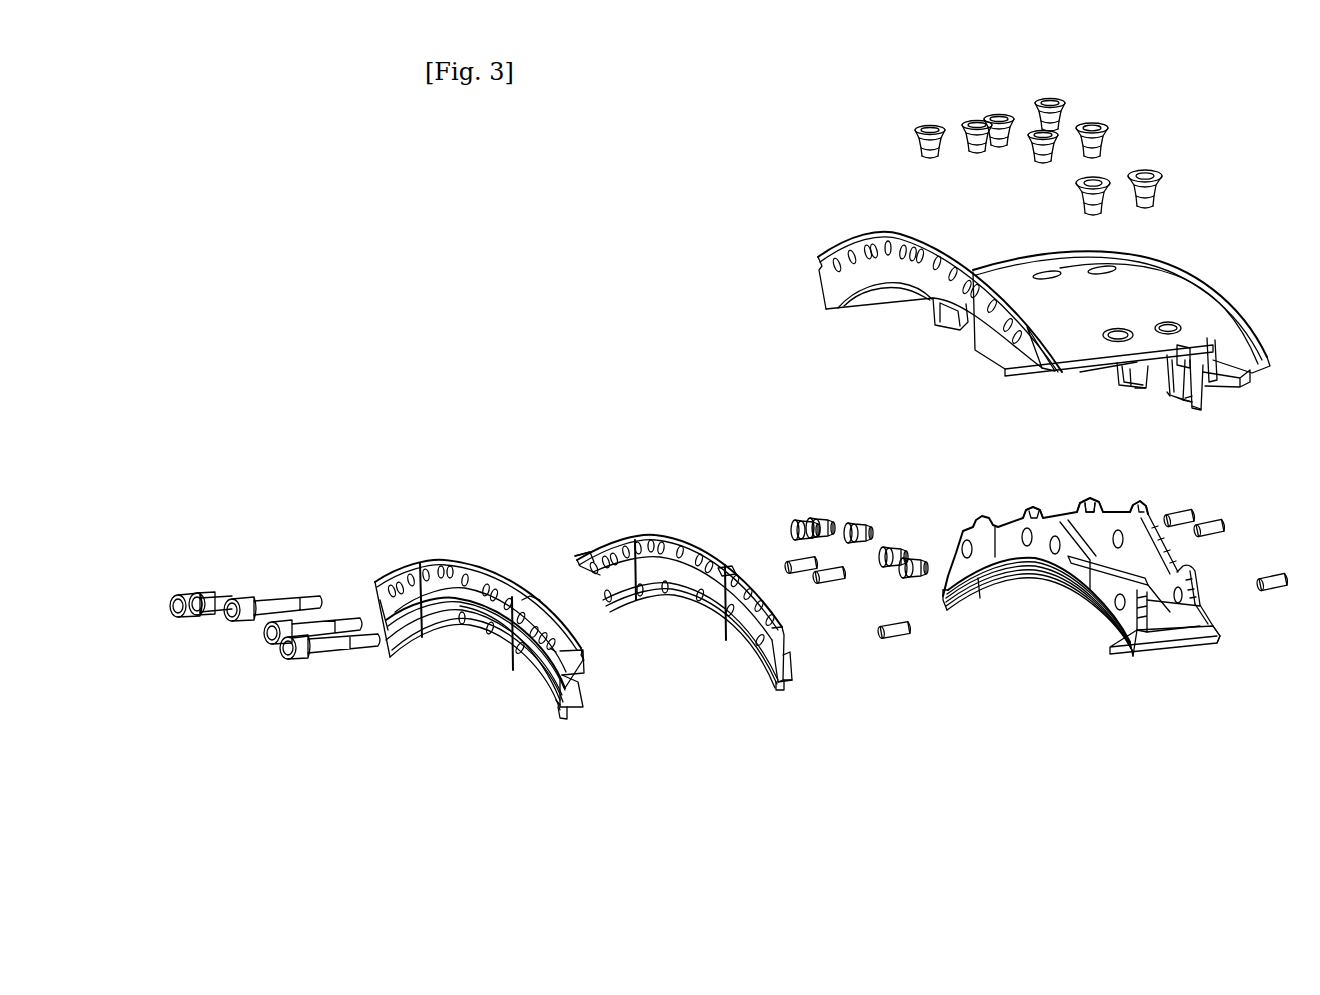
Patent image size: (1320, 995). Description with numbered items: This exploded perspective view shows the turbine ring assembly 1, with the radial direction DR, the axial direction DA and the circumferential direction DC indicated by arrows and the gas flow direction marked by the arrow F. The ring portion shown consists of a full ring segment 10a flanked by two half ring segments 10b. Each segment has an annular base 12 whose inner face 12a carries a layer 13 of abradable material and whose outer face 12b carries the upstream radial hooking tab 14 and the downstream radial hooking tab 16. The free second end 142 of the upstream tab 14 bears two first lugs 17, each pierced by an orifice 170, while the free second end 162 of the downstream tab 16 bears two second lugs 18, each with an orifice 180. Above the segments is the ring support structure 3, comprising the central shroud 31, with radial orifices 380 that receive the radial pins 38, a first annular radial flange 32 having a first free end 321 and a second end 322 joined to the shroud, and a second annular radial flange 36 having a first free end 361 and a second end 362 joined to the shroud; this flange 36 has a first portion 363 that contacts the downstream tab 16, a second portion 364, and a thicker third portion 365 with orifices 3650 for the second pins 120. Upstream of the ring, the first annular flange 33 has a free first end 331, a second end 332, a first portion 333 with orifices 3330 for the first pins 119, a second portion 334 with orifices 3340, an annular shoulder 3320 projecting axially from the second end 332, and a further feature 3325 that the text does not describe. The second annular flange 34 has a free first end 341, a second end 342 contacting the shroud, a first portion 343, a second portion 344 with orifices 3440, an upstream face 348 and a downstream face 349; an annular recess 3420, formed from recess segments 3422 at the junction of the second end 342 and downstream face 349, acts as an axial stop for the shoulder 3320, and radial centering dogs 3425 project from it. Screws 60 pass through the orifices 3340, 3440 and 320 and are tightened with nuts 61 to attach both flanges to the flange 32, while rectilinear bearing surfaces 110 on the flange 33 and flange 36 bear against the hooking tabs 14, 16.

The turbine ring 1 is at (316, 736).
The ring support structure 3 is at (988, 266).
The central shroud 31 is at (1052, 266).
The first annular radial flange 32 is at (1118, 375).
The orifices 320 is at (1128, 387).
The first free end 321 is at (1141, 404).
The second free end 322 is at (1135, 362).
The first annular flange 33 is at (704, 621).
The first end 331 is at (784, 702).
The second end 332 is at (796, 622).
The first portion 333 is at (808, 656).
The second portion 334 is at (602, 588).
The annular shoulder 3320 is at (592, 558).
The locating tab 3325 is at (732, 566).
The orifices 3330 is at (642, 598).
The orifices 3340 is at (635, 542).
The second annular flange 34 is at (513, 640).
The first free end 341 is at (570, 732).
The second end 342 is at (536, 622).
The first portion 343 is at (578, 708).
The second portion 344 is at (580, 680).
The upstream face 348 is at (556, 705).
The downstream face 349 is at (568, 664).
The annular recess 3420 is at (560, 614).
The recess segments 3422 is at (486, 566).
The radial centering dogs 3425 is at (530, 600).
The orifices 3440 is at (425, 566).
The second annular radial flange 36 is at (1205, 385).
The first free end 361 is at (1204, 428).
The second free end 362 is at (1245, 322).
The first portion 363 is at (1200, 408).
The second portion 364 is at (1242, 364).
The third portion 365 is at (1210, 400).
The orifices 3650 is at (1182, 362).
The radial pins 38 is at (1045, 106).
The orifices 380 is at (1118, 328).
The attaching screws 60 is at (258, 604).
The nuts 61 is at (835, 525).
The rectilinear bearing surfaces 110 is at (1188, 404).
The first pins 119 is at (828, 570).
The second pins 120 is at (1205, 518).
The full ring segment 10a is at (1046, 592).
The half ring segments 10b is at (962, 600).
The annular base 12 is at (1195, 652).
The inner face 12a is at (1138, 655).
The outer face 12b is at (1170, 650).
The layer of abradable material 13 is at (1218, 646).
The upstream radial hooking tab 14 is at (1120, 640).
The downstream radial hooking tab 16 is at (1208, 618).
The second end 162 is at (1172, 568).
The second end 142 is at (1114, 568).
The first lugs 17 is at (972, 530).
The orifice 170 is at (962, 546).
The second lugs 18 is at (1095, 512).
The orifice 180 is at (1080, 508).
The direction of gas flow F is at (415, 737).
The radial direction DR is at (948, 758).
The axial direction DA is at (948, 758).
The circumferential direction DC is at (1001, 637).